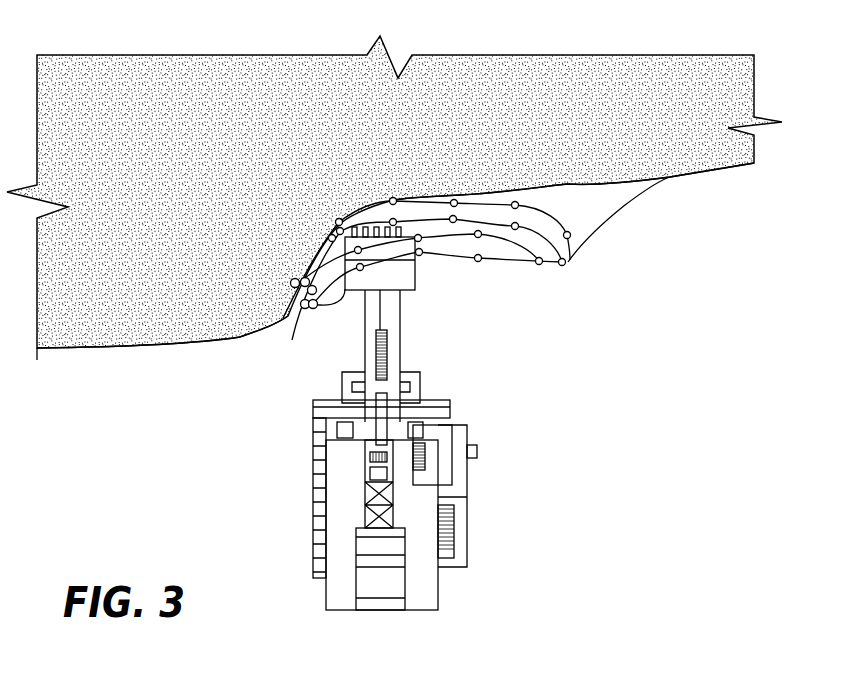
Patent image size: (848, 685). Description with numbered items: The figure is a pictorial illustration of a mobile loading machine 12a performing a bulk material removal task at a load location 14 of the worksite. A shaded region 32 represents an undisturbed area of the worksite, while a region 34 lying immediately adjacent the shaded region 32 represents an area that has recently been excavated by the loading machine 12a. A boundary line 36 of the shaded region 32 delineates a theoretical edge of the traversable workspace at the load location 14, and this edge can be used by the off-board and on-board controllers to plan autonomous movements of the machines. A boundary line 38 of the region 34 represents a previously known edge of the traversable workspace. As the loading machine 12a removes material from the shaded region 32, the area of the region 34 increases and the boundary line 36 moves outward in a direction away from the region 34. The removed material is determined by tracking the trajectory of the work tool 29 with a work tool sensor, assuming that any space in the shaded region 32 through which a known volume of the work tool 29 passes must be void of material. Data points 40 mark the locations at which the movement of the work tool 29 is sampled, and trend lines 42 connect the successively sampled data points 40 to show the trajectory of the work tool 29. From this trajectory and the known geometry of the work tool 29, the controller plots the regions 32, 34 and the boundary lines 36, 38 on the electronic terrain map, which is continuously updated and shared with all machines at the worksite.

The shaded region 32 is at (289, 138).
The boundary line 36 is at (565, 183).
The region 34 is at (567, 215).
The boundary line 38 is at (612, 218).
The load location 14 is at (535, 361).
The work tool 29 is at (418, 283).
The data points 40 is at (539, 266).
The trend lines 42 is at (562, 268).
The mobile loading machine 12a is at (433, 605).